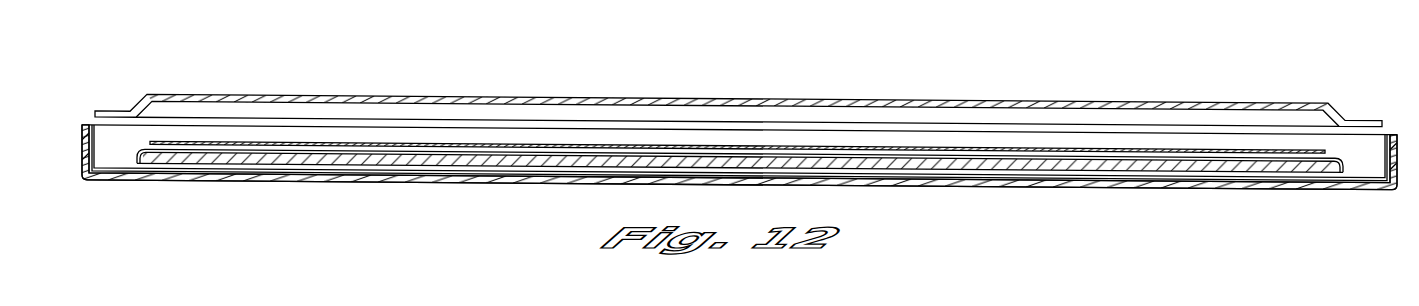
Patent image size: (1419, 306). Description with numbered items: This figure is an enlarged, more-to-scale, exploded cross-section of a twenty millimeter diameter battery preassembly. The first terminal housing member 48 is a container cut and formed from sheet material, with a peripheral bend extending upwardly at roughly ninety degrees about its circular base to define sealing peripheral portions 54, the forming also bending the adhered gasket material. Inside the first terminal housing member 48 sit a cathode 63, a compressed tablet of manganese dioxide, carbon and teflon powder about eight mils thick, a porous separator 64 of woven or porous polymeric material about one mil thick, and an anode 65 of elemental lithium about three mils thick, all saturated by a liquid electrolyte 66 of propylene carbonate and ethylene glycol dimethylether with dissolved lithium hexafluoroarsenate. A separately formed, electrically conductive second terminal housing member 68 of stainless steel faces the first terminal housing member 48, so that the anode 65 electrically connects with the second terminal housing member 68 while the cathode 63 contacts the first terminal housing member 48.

The first terminal housing member 48 is at (1240, 190).
The sealing peripheral portions 54 is at (81, 160).
The cathode 63 is at (1038, 162).
The porous separator 64 is at (1173, 158).
The anode 65 is at (1063, 148).
The liquid electrolyte 66 is at (110, 168).
The second terminal housing member 68 is at (865, 98).